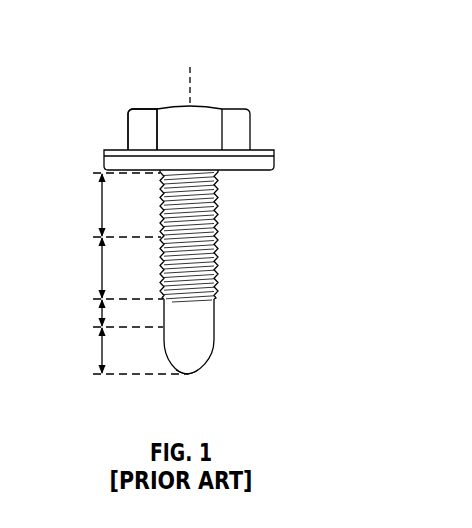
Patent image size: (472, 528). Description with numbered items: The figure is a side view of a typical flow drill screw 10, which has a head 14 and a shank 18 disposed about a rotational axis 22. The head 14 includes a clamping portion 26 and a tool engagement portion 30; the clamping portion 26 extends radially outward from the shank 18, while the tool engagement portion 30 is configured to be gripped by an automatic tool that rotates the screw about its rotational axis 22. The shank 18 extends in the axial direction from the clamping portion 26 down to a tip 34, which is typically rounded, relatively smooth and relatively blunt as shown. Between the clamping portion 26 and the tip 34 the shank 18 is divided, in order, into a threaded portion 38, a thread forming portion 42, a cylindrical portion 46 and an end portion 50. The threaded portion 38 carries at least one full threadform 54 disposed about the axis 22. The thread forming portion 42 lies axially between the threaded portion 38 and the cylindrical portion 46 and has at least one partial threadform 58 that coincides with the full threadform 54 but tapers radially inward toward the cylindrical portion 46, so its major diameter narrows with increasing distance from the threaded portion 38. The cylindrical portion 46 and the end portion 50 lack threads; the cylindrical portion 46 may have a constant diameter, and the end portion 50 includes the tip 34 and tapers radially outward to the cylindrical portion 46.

The flow drill screw 10 is at (278, 121).
The head 14 is at (178, 128).
The shank 18 is at (203, 316).
The rotational axis 22 is at (191, 88).
The clamping portion 26 is at (103, 166).
The tool engagement portion 30 is at (126, 125).
The tip 34 is at (186, 376).
The threaded portion 38 is at (102, 208).
The thread forming portion 42 is at (102, 268).
The cylindrical portion 46 is at (102, 314).
The end portion 50 is at (102, 352).
The full threadform 54 is at (219, 205).
The partial threadform 58 is at (218, 285).